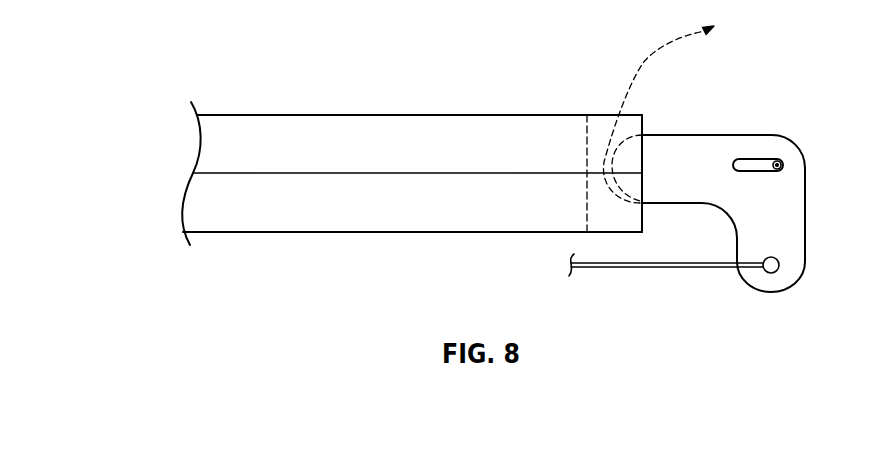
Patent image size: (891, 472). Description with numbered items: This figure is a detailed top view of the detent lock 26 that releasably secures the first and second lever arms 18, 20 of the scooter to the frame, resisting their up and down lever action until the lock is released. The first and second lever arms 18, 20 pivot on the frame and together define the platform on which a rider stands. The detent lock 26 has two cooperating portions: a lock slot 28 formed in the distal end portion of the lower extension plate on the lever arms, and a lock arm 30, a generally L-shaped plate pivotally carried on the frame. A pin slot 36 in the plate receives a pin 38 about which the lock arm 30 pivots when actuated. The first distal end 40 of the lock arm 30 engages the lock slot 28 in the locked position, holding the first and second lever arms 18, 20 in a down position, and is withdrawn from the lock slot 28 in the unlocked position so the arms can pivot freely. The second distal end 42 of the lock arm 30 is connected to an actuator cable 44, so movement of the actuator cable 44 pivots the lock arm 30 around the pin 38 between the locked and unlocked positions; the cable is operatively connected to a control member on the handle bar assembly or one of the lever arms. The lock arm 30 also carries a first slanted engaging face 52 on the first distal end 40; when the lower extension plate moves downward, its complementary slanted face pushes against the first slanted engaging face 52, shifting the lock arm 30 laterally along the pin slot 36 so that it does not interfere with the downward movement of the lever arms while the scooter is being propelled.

The first lever arm 18 is at (347, 217).
The second lever arm 20 is at (408, 132).
The detent lock 26 is at (736, 159).
The lock slot 28 is at (607, 112).
The lock arm 30 is at (790, 216).
The pin slot 36 is at (745, 163).
The pin 38 is at (782, 165).
The first distal end 40 is at (626, 212).
The second distal end 42 is at (786, 265).
The actuator cable 44 is at (665, 268).
The first slanted engaging face 52 is at (616, 188).